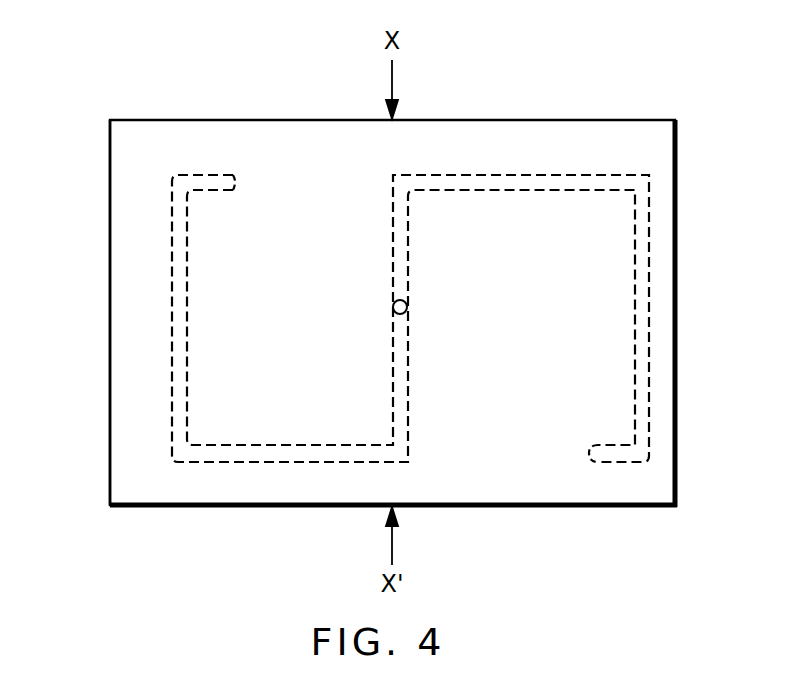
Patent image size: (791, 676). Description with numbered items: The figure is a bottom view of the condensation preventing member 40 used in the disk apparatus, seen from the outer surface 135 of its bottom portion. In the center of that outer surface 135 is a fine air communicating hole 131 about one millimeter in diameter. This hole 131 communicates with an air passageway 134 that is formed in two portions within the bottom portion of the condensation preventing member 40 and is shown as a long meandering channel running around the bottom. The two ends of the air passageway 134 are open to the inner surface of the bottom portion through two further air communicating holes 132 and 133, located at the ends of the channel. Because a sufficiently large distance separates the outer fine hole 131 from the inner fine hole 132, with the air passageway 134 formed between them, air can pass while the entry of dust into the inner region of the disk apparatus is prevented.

The condensation preventing member 40 is at (640, 98).
The air communicating hole 131 is at (393, 307).
The air communicating hole 132 is at (600, 463).
The air communicating hole 133 is at (231, 174).
The air passageway 134 is at (410, 241).
The outer surface 135 is at (120, 342).